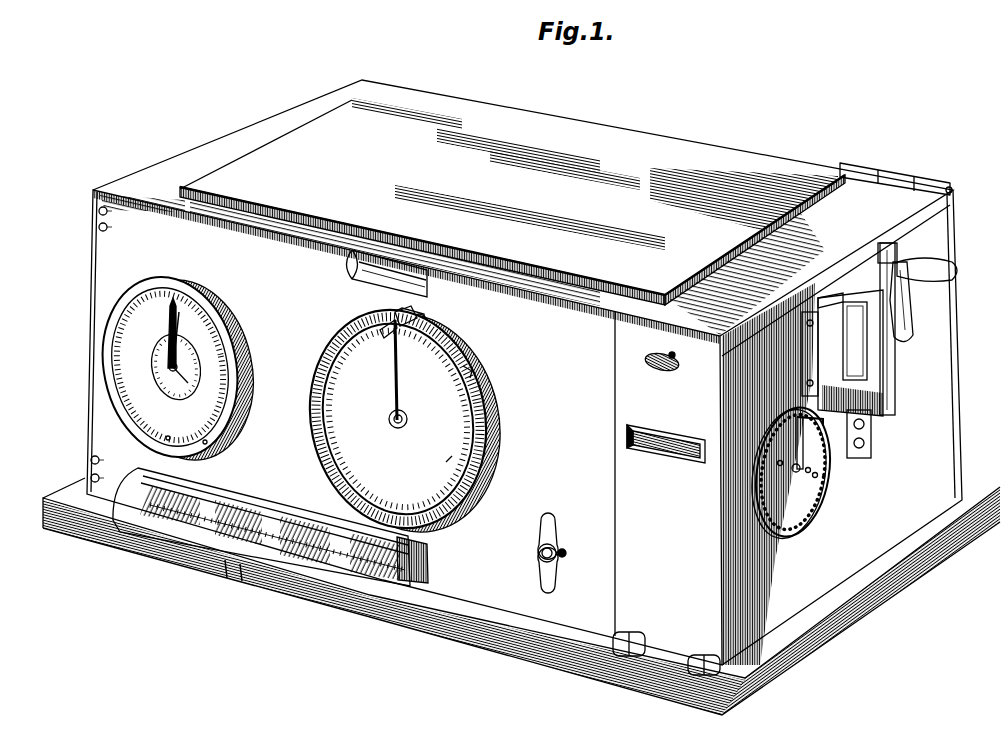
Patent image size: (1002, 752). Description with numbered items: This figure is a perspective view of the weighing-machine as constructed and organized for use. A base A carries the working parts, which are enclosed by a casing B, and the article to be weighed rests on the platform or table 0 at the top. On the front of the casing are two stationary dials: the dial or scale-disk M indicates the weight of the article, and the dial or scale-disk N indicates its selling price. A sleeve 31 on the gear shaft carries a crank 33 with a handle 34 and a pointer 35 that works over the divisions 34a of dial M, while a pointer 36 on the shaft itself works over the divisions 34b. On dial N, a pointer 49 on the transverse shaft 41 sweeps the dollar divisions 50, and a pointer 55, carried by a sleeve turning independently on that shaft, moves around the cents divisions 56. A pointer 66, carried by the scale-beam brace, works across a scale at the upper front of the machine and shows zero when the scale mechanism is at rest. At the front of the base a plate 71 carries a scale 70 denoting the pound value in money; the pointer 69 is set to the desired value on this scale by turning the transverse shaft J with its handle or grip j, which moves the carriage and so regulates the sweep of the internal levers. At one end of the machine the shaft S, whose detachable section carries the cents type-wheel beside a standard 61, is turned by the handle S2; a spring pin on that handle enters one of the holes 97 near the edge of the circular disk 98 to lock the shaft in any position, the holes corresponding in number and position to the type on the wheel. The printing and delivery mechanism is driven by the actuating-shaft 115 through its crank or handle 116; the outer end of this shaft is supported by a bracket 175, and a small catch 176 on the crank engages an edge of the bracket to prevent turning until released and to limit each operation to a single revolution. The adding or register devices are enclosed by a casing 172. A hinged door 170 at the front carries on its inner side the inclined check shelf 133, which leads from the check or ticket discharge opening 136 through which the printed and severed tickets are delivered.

The platform or table 0 is at (668, 165).
The inclosing casing B is at (101, 265).
The base A is at (500, 640).
The standard 61 is at (353, 280).
The indicating hand or pointer 66 is at (390, 282).
The indicating hand or pointer 35 is at (399, 316).
The crank 33 is at (428, 320).
The dial or scale-disk N is at (238, 408).
The indicating hand or pointer 49 is at (172, 336).
The transverse shaft 41 is at (192, 378).
The indicating hand or pointer 55 is at (180, 338).
The divisions 50 is at (168, 439).
The divisions 56 is at (205, 443).
The dial or scale-disk M is at (405, 420).
The indicating hand or pointer 36 is at (396, 382).
The handle 34 is at (385, 336).
The divisions 34a is at (472, 370).
The divisions 34b is at (450, 460).
The sleeve 31 is at (396, 428).
The indicating hand or pointer 69 is at (298, 578).
The scale 70 is at (242, 581).
The plate 71 is at (405, 578).
The handle or grip j is at (558, 536).
The transverse shaft J is at (566, 556).
The hinged door 170 is at (630, 582).
The check or ticket shelf 133 is at (665, 446).
The check or ticket discharge opening 136 is at (631, 450).
The casing 172 is at (860, 393).
The bracket 175 is at (896, 345).
The catch 176 is at (896, 250).
The operating crank or handle 116 is at (958, 271).
The actuating-shaft 115 is at (912, 334).
The circular plate or disk 98 is at (810, 492).
The holes or openings 97 is at (808, 527).
The shaft S is at (794, 471).
The handle S2 is at (806, 432).